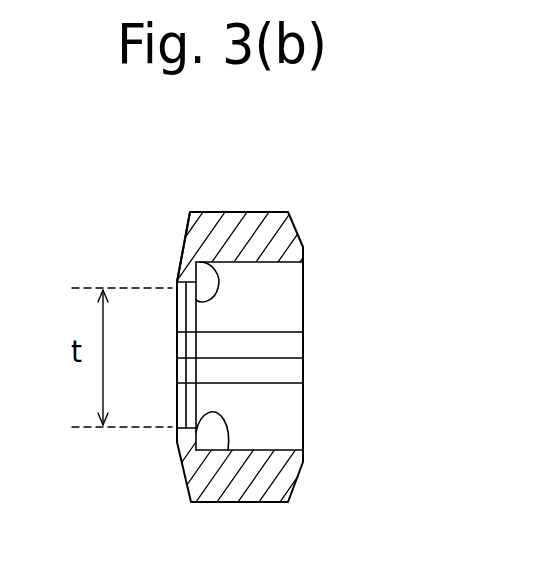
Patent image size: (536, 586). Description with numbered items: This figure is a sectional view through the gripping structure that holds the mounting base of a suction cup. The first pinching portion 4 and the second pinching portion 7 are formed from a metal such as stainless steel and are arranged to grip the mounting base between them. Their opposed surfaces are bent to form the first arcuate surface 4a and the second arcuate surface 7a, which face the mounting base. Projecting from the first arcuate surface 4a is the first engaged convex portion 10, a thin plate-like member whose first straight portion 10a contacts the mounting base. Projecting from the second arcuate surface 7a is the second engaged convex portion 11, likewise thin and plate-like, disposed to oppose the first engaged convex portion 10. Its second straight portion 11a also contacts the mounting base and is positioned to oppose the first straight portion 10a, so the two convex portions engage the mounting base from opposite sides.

The first pinching portion 4 is at (270, 493).
The first arcuate surface 4a is at (265, 450).
The second pinching portion 7 is at (260, 225).
The second arcuate surface 7a is at (268, 262).
The first engaged convex portion 10 is at (178, 442).
The first straight portion 10a is at (226, 452).
The second engaged convex portion 11 is at (177, 280).
The second straight portion 11a is at (211, 262).